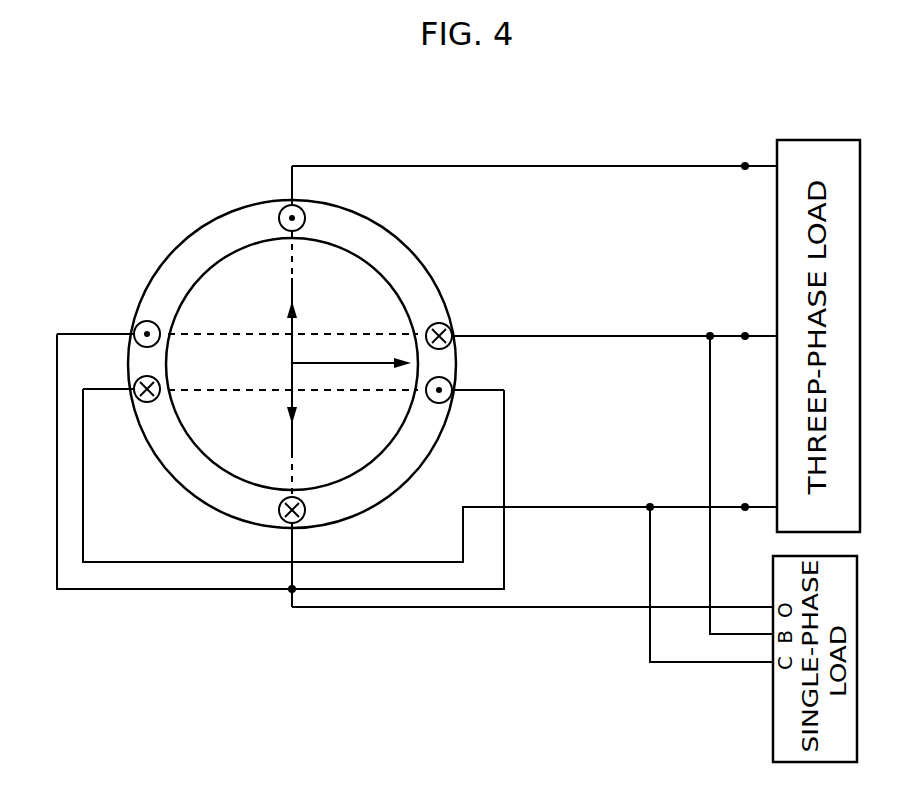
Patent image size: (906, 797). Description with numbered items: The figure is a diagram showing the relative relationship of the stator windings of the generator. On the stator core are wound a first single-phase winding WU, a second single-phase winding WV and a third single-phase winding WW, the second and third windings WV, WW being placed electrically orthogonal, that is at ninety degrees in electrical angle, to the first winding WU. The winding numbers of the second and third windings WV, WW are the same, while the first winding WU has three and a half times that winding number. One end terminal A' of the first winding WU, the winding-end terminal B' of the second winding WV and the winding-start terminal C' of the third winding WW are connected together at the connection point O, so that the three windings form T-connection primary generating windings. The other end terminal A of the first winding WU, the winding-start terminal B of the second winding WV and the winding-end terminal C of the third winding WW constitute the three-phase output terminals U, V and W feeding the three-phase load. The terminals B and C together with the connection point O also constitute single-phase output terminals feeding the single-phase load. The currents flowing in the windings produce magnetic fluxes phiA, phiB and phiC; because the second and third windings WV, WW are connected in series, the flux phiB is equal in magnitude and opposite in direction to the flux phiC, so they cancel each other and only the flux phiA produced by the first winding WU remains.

The other end terminal of the first single-phase winding A is at (291, 198).
The one end terminal of the first single-phase winding A' is at (299, 552).
The winding-start terminal of the second single-phase winding B is at (601, 326).
The winding-end terminal of the second single-phase winding B' is at (108, 323).
The winding-end terminal of the third single-phase winding C is at (121, 383).
The winding-start terminal of the third single-phase winding C' is at (465, 386).
The first single-phase winding WU is at (296, 270).
The second single-phase winding WV is at (375, 335).
The third single-phase winding WW is at (200, 392).
The magnetic flux produced by the first single-phase winding phiA is at (383, 366).
The magnetic flux produced by the second single-phase winding phiB is at (296, 327).
The magnetic flux produced by the third single-phase winding phiC is at (297, 403).
The three-phase output terminal U is at (745, 154).
The three-phase output terminal V is at (745, 325).
The three-phase output terminal W is at (745, 496).
The connection point O is at (280, 602).